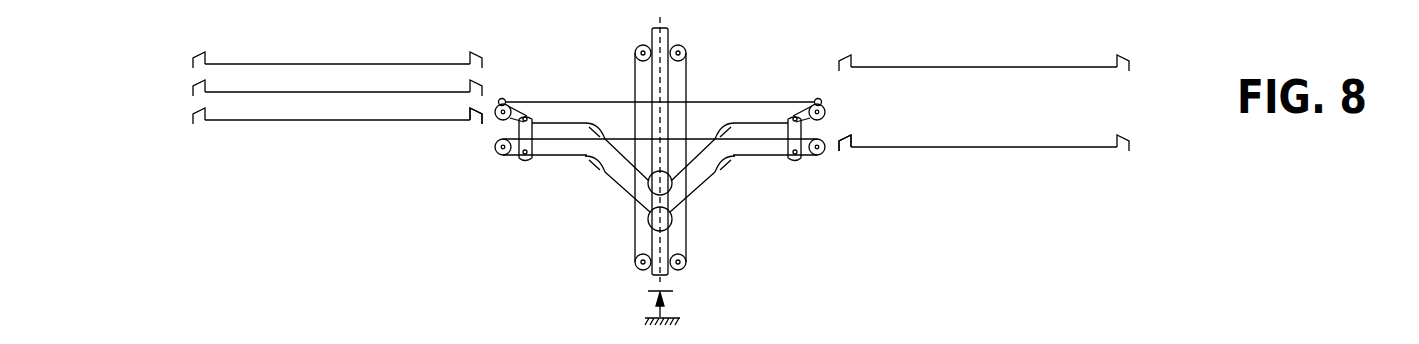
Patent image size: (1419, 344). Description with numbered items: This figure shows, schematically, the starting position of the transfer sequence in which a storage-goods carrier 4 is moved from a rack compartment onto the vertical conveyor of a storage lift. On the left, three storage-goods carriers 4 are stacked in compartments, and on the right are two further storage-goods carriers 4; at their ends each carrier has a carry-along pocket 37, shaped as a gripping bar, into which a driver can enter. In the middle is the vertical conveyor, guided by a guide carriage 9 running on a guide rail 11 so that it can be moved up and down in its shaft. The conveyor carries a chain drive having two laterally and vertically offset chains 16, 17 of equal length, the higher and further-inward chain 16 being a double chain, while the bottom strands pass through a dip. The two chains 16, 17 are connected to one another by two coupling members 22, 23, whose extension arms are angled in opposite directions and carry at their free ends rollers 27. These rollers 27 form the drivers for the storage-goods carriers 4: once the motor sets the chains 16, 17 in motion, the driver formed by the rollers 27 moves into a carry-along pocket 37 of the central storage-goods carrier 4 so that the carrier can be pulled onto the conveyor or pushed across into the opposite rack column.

The storage-goods carrier 4 is at (312, 68).
The carry-along pocket 37 is at (477, 115).
The guide carriage 9 is at (677, 93).
The guide rail 11 is at (662, 85).
The chain 16 is at (552, 101).
The roller 27 is at (503, 98).
The chain 17 is at (556, 158).
The coupling member 22 is at (530, 160).
The coupling member 23 is at (789, 140).